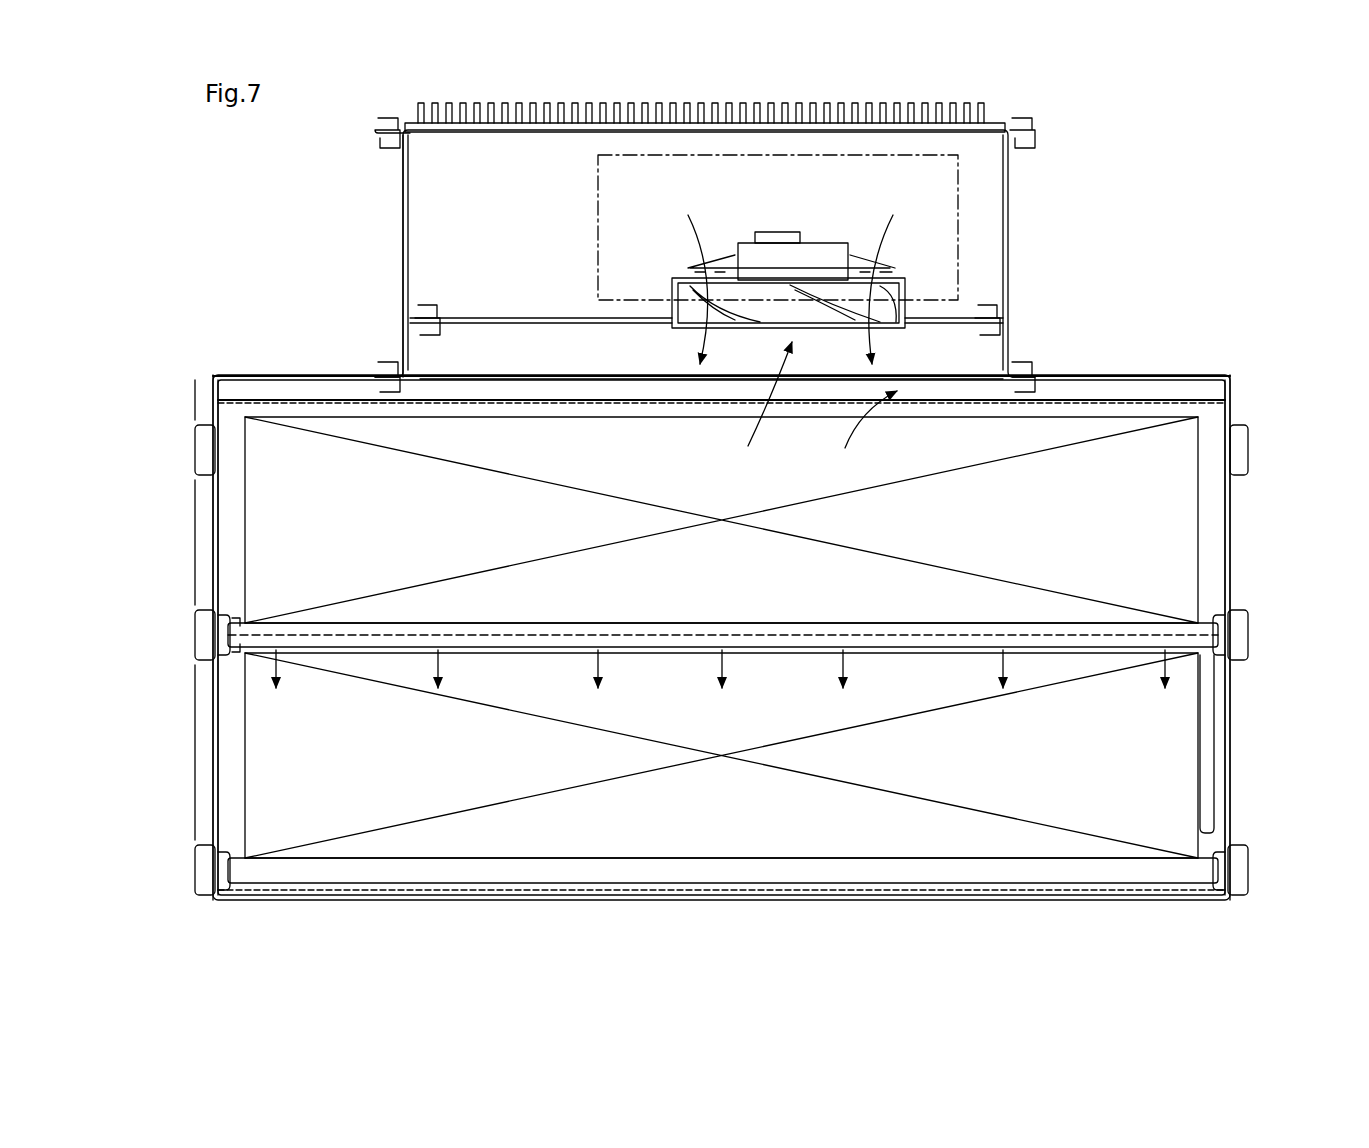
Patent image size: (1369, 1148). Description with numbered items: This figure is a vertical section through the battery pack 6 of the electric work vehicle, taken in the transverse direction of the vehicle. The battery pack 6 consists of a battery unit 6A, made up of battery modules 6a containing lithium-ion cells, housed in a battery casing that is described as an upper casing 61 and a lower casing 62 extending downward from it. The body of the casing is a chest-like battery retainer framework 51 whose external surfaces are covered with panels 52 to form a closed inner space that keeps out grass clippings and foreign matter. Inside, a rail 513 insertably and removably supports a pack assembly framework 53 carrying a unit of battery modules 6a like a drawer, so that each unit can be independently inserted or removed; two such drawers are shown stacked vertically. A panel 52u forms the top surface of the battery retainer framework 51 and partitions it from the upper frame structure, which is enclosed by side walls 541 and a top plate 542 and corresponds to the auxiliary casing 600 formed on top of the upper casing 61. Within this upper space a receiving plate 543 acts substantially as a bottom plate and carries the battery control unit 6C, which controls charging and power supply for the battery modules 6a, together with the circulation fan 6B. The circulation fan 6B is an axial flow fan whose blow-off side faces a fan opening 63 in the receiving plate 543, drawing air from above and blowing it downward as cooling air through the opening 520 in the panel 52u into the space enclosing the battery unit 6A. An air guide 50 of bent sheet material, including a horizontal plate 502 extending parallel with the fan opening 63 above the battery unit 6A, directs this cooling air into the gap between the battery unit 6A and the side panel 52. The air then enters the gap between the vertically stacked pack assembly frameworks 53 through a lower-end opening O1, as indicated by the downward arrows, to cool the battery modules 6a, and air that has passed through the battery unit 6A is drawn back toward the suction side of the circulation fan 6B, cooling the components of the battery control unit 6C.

The battery pack 6 is at (255, 210).
The auxiliary casing 600 is at (398, 180).
The side wall 541 is at (400, 222).
The top plate 542 is at (528, 132).
The receiving plate 543 is at (535, 320).
The battery control unit 6C is at (598, 240).
The circulation fan 6B is at (892, 300).
The lower casing 62 is at (293, 370).
The upper casing 61 is at (212, 445).
The panel 52 is at (213, 540).
The panel 52u is at (1052, 376).
The air guide 50 is at (1080, 396).
The horizontal plate 502 is at (627, 396).
The fan opening 63 is at (790, 343).
The opening 520 is at (865, 434).
The battery unit 6A is at (1134, 415).
The battery module 6a is at (1185, 512).
The battery retainer framework 51 is at (1250, 436).
The pack assembly framework 53 is at (1235, 640).
The rail 513 is at (222, 660).
The lower-end opening O1 is at (400, 642).